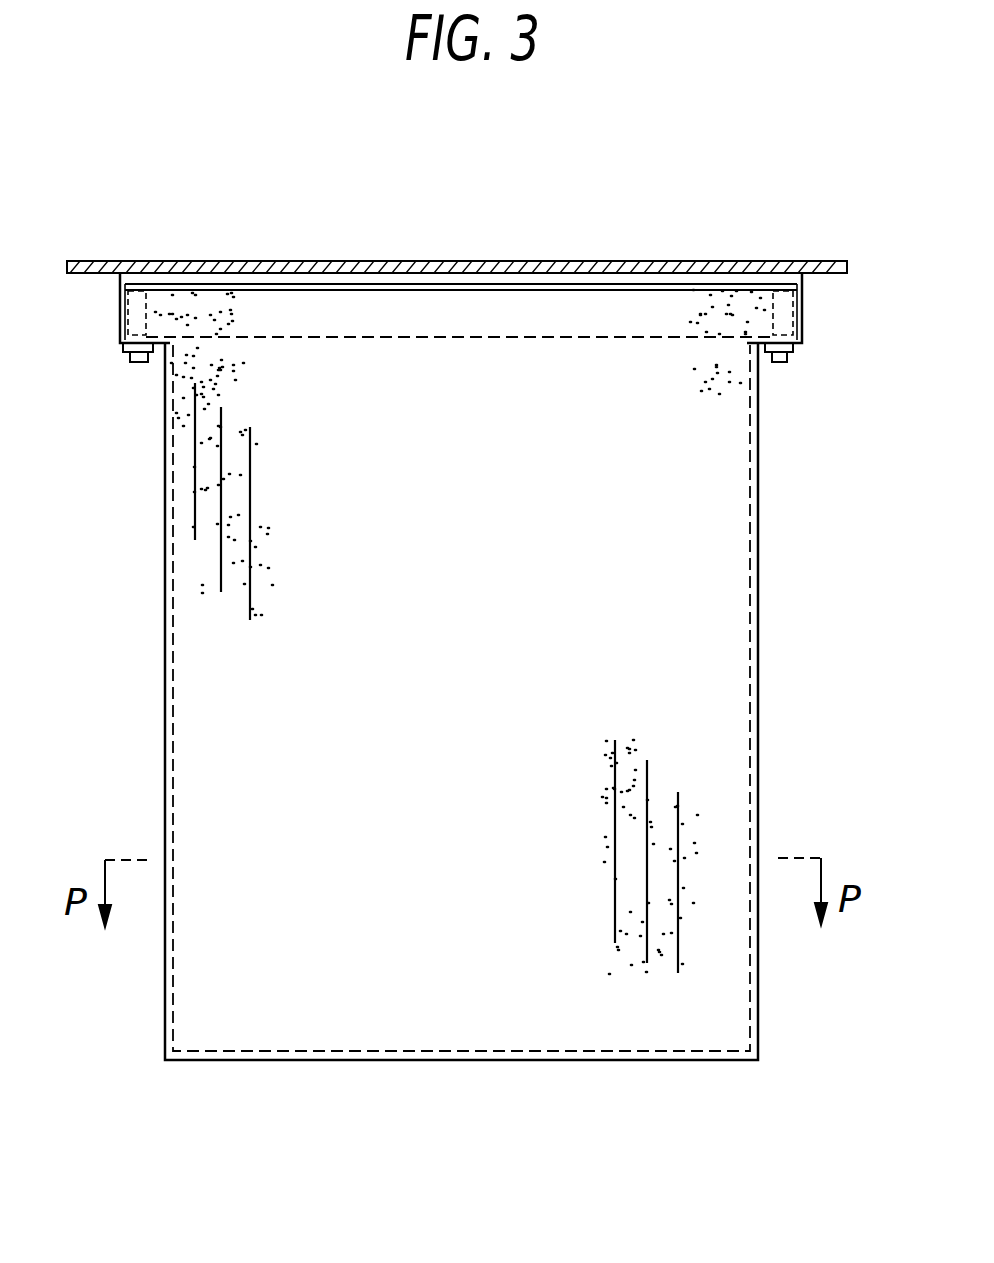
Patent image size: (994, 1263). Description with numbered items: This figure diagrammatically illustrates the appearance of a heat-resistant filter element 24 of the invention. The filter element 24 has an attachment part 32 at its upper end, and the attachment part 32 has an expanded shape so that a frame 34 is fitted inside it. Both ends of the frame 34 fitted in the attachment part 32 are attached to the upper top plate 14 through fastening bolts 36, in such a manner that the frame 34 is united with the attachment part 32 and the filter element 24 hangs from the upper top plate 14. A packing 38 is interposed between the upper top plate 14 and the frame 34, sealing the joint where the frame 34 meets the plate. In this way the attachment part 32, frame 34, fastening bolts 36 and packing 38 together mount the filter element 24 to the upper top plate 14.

The upper top plate 14 is at (306, 262).
The heat-resistant filter element 24 is at (760, 662).
The attachment part 32 is at (803, 305).
The frame 34 is at (507, 300).
The fastening bolts 36 is at (140, 365).
The packing 38 is at (632, 284).